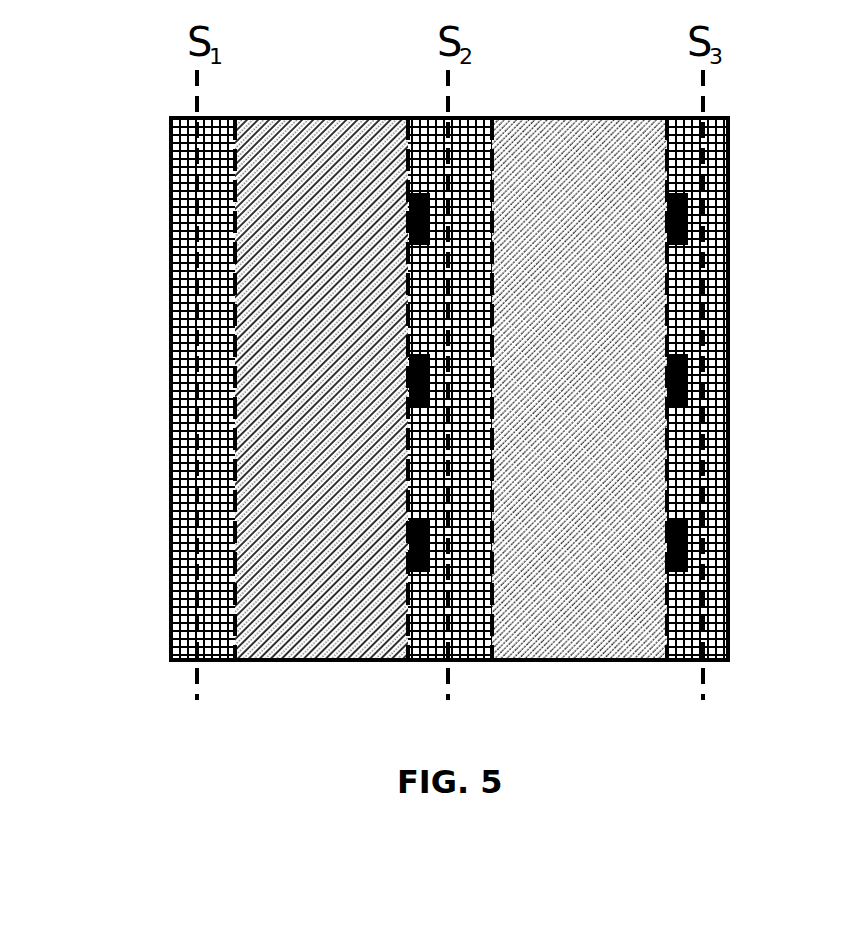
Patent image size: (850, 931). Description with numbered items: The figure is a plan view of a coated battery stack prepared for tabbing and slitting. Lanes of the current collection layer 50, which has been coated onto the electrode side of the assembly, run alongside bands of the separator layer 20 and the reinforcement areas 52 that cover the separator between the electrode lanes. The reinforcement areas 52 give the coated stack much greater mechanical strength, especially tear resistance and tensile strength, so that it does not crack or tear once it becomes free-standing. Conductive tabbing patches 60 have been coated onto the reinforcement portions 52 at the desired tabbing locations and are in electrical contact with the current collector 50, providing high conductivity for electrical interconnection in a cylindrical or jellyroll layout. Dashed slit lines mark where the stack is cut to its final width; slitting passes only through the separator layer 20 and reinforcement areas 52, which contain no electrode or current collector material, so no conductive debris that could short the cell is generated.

The separator layer 20 is at (728, 257).
The current collection layer 50 is at (303, 632).
The reinforcement areas 52 is at (215, 457).
The conductive tabbing patches 60 is at (687, 380).